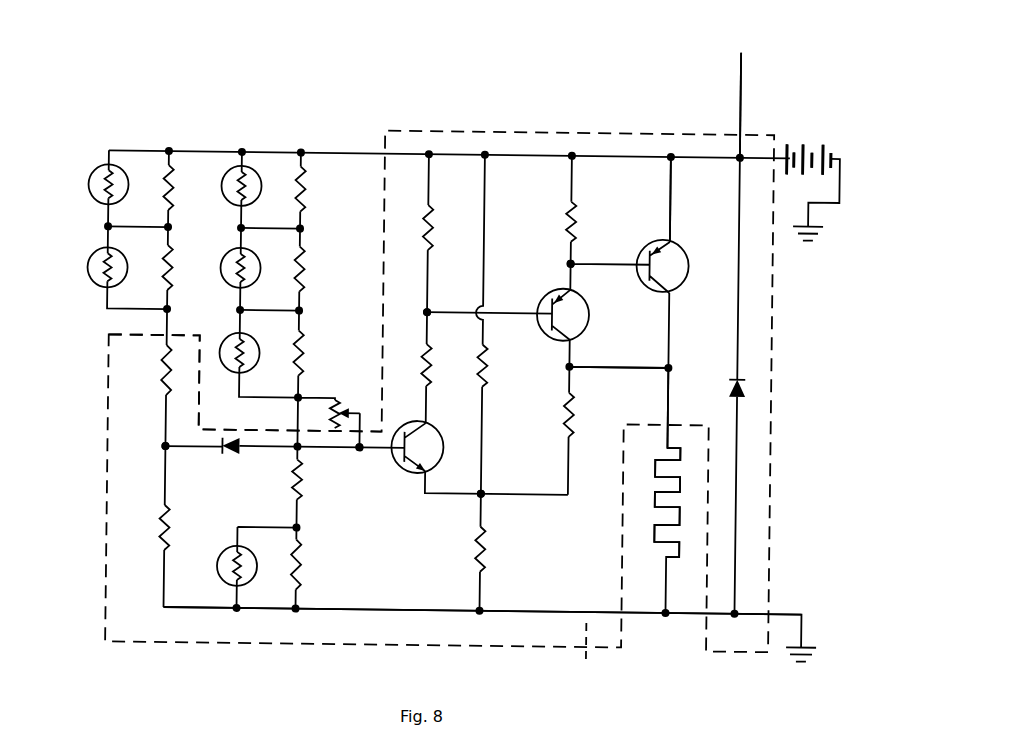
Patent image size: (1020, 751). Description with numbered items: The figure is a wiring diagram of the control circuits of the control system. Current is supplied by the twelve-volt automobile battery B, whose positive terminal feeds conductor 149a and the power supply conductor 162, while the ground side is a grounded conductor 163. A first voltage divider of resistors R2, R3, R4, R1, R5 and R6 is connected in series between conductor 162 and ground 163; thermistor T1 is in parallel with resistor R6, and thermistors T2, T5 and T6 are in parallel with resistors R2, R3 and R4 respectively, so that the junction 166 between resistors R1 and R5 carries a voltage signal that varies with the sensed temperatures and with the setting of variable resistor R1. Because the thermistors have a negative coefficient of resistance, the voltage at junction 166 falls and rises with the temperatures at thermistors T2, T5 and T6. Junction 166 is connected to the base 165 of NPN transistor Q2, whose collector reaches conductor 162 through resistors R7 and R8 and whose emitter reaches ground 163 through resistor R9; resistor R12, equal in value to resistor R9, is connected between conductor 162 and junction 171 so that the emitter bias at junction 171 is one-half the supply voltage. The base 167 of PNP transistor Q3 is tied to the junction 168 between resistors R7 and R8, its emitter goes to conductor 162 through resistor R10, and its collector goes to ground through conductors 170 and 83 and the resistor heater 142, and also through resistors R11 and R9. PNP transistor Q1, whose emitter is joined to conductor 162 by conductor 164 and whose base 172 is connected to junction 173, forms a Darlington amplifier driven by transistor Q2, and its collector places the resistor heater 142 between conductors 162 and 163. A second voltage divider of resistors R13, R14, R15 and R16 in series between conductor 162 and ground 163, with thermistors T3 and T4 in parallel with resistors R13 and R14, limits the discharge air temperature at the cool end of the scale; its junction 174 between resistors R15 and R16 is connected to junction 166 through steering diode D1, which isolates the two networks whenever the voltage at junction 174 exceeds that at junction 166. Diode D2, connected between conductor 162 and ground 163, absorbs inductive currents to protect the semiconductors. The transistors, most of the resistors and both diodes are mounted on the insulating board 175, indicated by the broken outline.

The thermistor T3 is at (86, 190).
The thermistor T4 is at (86, 273).
The resistor R13 is at (171, 198).
The resistor R14 is at (171, 278).
The thermistor T2 is at (259, 190).
The thermistor T5 is at (259, 272).
The resistor R2 is at (304, 198).
The resistor R3 is at (304, 278).
The thermistor T6 is at (259, 357).
The resistor R4 is at (304, 368).
The variable resistor R1 is at (331, 421).
The rectifier diode D1 is at (230, 441).
The resistor R15 is at (162, 377).
The junction 174 is at (165, 452).
The resistor R16 is at (162, 532).
The thermistor T1 is at (230, 553).
The resistor R5 is at (293, 487).
The resistor R6 is at (304, 553).
The junction 166 is at (359, 456).
The base 165 is at (400, 468).
The NPN transistor Q2 is at (428, 427).
The resistor R7 is at (431, 222).
The junction 168 is at (428, 310).
The resistor R8 is at (432, 363).
The resistor R12 is at (488, 365).
The resistor R9 is at (478, 543).
The junction 171 is at (486, 494).
The conductor 162 is at (522, 155).
The resistor R10 is at (575, 216).
The junction 173 is at (566, 262).
The base 167 is at (546, 301).
The PNP transistor Q3 is at (588, 323).
The resistor R11 is at (565, 418).
The conductor 170 is at (632, 368).
The base 172 is at (647, 276).
The PNP transistor Q1 is at (688, 265).
The conductor 164 is at (672, 200).
The conductor 83 is at (672, 398).
The resistor heater 142 is at (656, 527).
The conductor 149a is at (735, 72).
The battery B is at (798, 150).
The diode D2 is at (748, 388).
The grounded conductor 163 is at (640, 614).
The insulating board 175 is at (589, 622).